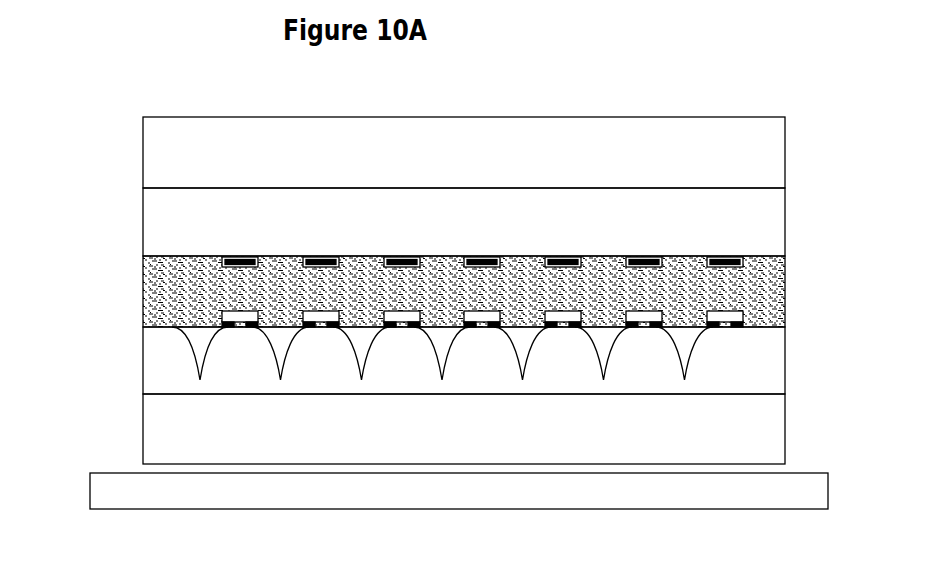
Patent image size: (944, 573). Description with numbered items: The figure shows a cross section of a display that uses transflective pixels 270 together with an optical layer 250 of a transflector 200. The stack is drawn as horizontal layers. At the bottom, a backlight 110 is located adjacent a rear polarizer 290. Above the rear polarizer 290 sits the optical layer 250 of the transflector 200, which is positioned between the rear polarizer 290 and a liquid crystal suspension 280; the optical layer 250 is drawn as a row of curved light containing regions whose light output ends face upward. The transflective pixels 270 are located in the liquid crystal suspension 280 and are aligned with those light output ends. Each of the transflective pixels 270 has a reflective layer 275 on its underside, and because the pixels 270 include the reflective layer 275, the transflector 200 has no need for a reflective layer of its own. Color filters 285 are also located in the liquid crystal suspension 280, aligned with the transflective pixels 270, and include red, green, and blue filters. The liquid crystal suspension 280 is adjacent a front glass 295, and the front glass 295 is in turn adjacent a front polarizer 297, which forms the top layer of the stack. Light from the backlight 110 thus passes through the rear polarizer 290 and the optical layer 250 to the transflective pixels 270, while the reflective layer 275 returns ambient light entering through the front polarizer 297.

The front polarizer 297 is at (143, 153).
The front glass 295 is at (143, 212).
The liquid crystal suspension 280 is at (143, 290).
The color filters 285 is at (745, 257).
The transflective pixels 270 is at (745, 310).
The reflective layer 275 is at (745, 324).
The optical layer 250 is at (720, 363).
The transflector 200 is at (117, 322).
The rear polarizer 290 is at (143, 440).
The backlight 110 is at (805, 510).